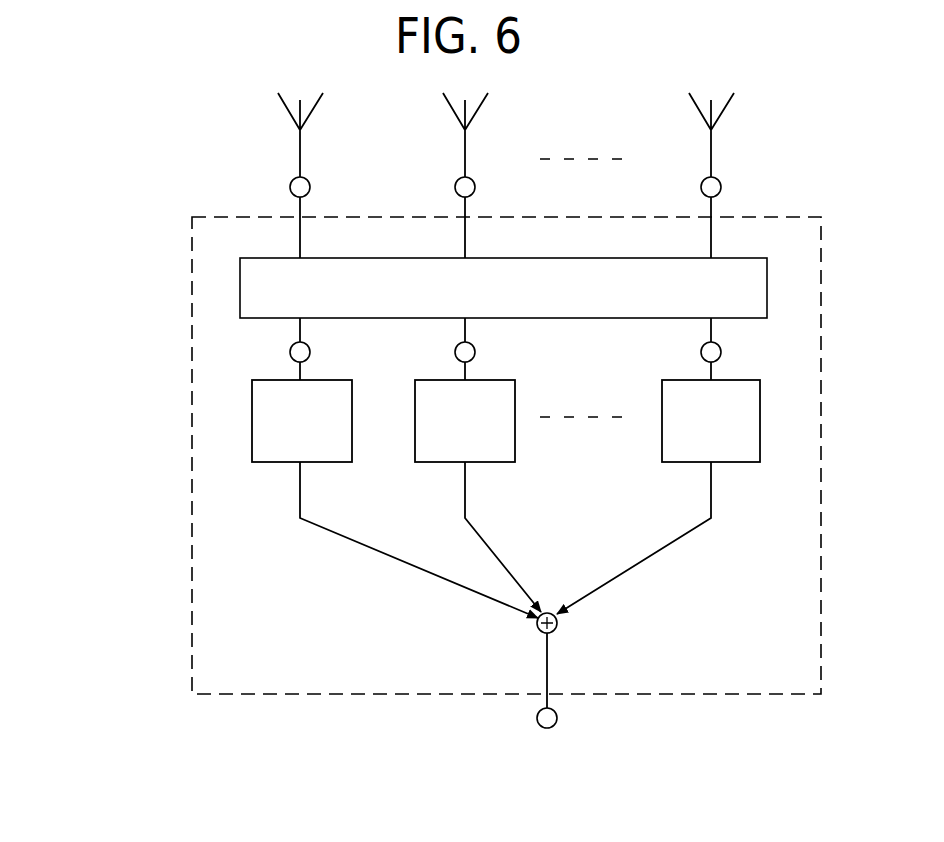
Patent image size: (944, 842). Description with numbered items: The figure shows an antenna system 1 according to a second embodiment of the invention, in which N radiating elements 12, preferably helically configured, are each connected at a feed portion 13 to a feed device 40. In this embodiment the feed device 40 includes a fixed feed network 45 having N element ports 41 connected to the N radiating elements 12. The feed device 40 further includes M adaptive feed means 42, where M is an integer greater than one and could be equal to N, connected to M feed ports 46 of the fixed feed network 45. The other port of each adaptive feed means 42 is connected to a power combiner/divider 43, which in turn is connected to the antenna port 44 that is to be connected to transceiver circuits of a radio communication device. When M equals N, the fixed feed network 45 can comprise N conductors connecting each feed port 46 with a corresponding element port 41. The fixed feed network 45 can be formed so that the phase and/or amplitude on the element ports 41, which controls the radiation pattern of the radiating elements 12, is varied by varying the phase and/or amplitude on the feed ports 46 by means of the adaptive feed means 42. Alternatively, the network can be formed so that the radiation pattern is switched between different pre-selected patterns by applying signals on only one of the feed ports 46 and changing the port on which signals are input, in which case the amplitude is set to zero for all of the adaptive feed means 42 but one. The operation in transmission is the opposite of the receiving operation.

The antenna system 1 is at (130, 221).
The radiating elements 12 is at (300, 108).
The feed portions 13 is at (310, 187).
The feed device 40 is at (192, 458).
The element ports 41 is at (300, 235).
The adaptive feed means 42 is at (313, 465).
The power combiner/divider 43 is at (557, 625).
The antenna port 44 is at (558, 720).
The fixed feed network 45 is at (767, 290).
The feed ports 46 is at (300, 329).